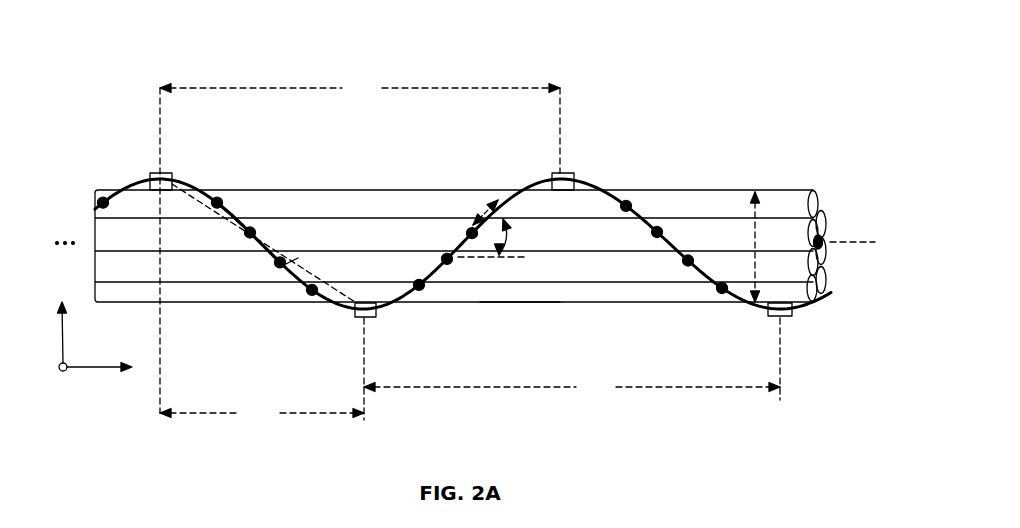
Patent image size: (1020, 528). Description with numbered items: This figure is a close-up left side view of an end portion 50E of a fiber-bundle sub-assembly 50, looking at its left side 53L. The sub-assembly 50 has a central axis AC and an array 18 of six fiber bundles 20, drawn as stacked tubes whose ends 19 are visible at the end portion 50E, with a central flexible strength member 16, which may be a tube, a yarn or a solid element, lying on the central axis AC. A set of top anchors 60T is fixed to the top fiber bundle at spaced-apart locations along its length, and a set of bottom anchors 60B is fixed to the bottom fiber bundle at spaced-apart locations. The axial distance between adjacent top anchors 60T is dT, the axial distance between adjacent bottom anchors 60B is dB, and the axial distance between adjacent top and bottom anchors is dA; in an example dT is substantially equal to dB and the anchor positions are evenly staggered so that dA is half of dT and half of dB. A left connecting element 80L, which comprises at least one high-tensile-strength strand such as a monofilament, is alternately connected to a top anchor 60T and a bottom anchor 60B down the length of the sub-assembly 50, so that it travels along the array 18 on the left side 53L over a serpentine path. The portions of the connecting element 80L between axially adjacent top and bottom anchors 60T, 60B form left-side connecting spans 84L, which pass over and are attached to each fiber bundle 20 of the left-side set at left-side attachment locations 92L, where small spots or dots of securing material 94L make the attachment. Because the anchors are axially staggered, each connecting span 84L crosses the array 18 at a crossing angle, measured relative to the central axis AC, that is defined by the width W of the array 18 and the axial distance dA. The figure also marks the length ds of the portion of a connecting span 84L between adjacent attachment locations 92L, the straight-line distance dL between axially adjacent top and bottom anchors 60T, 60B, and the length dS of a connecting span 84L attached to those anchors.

The fiber-bundle sub-assembly 50 is at (133, 50).
The end portion 50E is at (710, 140).
The array 18 is at (738, 172).
The fiber bundles 20 is at (363, 230).
The tube end faces 19 is at (825, 202).
The flexible strength member 16 is at (822, 243).
The central axis AC is at (858, 240).
The left-side connecting span 84L is at (262, 254).
The securing material 94L is at (310, 294).
The top anchors 60T is at (157, 173).
The bottom anchors 60B is at (354, 318).
The left connecting element 80L is at (237, 208).
The left-side attachment locations 92L is at (287, 247).
The left side 53L is at (525, 294).
The straight-line distance dL is at (209, 200).
The connecting span length dS is at (298, 258).
The portion length ds is at (473, 223).
The top anchor spacing dT is at (360, 244).
The axial distance between adjacent top and bottom anchors dA is at (262, 372).
The bottom anchor spacing dB is at (572, 359).
The array width W is at (744, 247).